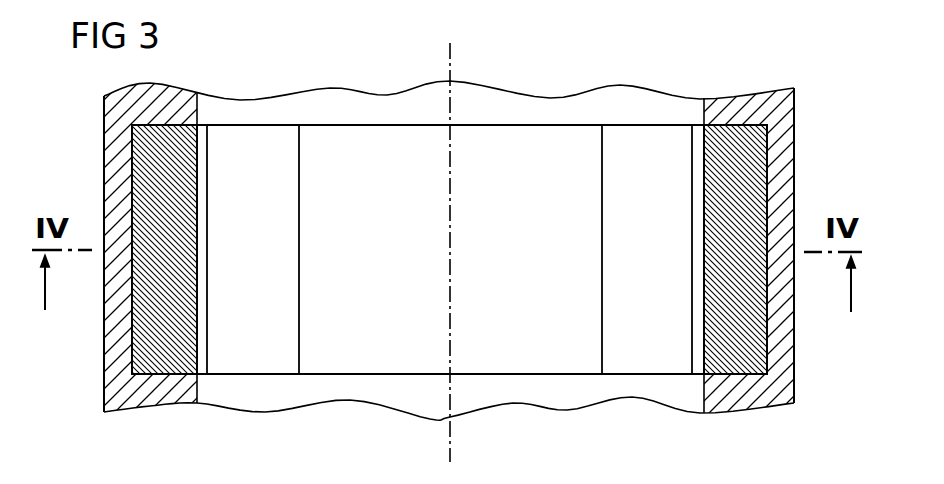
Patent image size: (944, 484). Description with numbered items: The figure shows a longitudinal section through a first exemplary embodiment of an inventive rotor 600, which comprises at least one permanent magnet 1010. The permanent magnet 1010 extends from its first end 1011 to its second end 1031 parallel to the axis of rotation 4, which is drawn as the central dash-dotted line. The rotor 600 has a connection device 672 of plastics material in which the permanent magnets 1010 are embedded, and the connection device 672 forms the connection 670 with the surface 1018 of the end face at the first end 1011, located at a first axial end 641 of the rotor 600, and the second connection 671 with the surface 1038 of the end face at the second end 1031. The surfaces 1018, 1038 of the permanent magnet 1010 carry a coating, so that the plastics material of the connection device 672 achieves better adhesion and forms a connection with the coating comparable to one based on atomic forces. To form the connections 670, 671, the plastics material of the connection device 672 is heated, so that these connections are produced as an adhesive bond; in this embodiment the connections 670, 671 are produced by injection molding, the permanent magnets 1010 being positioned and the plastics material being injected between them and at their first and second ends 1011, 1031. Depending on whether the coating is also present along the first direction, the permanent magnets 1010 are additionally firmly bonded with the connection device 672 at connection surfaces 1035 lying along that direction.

The rotor 600 is at (714, 81).
The first axial end 641 is at (801, 107).
The connection 670 is at (98, 107).
The second connection 671 is at (93, 381).
The connection device 672 is at (110, 200).
The permanent magnet 1010 is at (200, 138).
The first end 1011 is at (122, 128).
The surface 1018 is at (178, 113).
The second end 1031 is at (120, 366).
The connection surfaces 1035 is at (776, 329).
The surface 1038 is at (167, 378).
The axis of rotation 4 is at (450, 452).